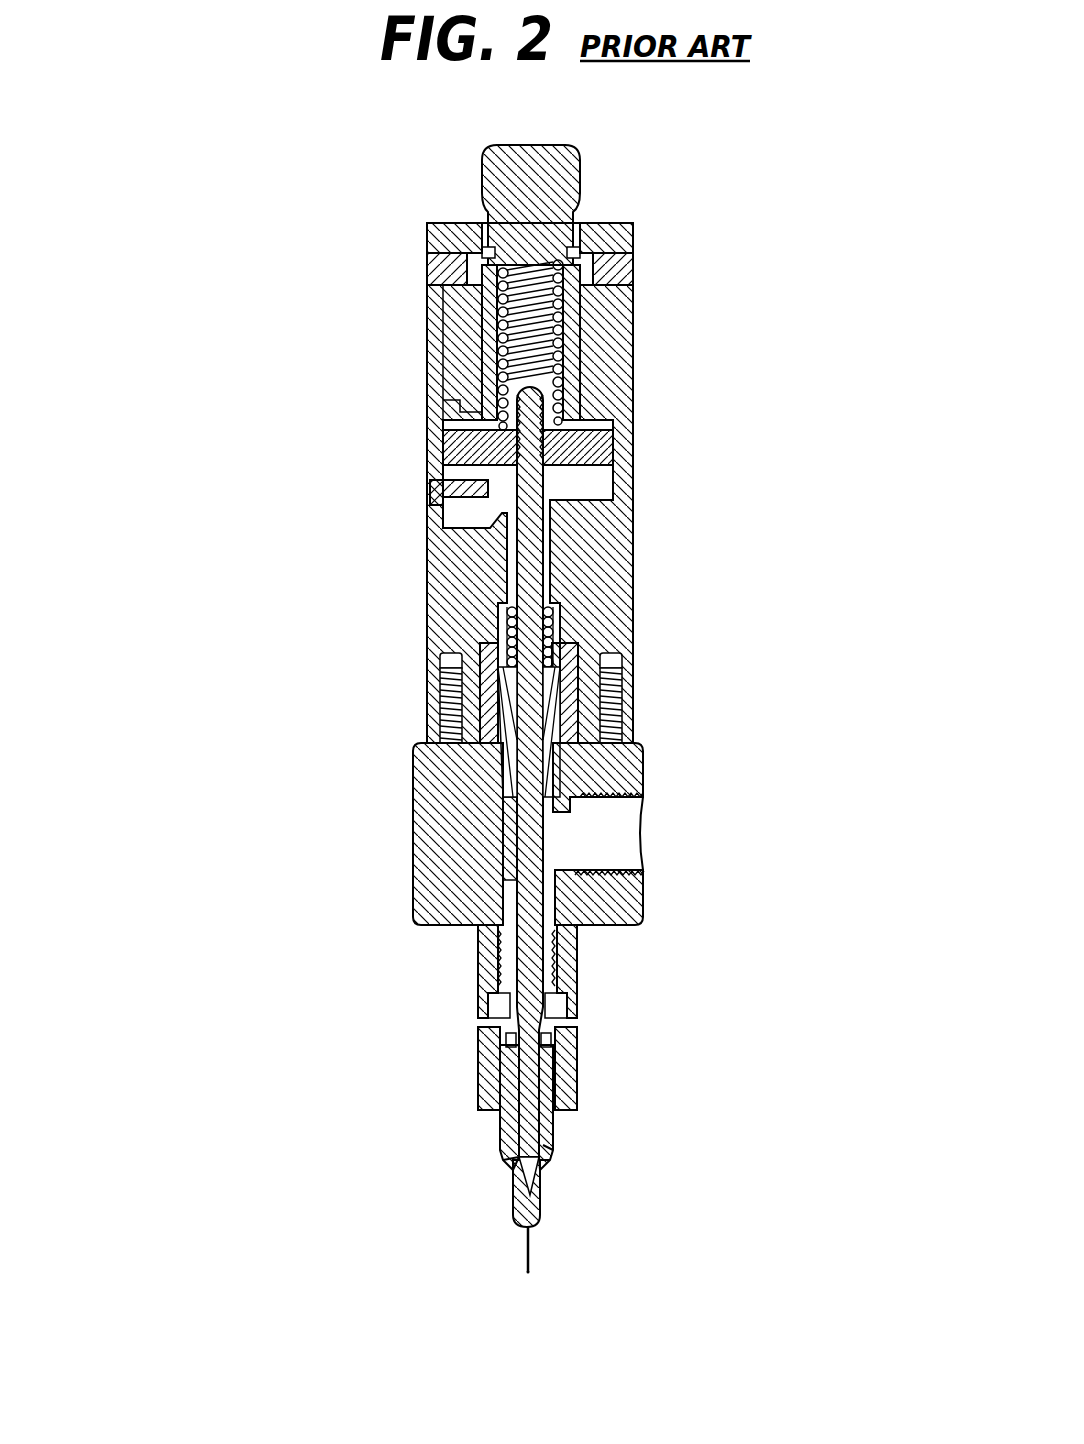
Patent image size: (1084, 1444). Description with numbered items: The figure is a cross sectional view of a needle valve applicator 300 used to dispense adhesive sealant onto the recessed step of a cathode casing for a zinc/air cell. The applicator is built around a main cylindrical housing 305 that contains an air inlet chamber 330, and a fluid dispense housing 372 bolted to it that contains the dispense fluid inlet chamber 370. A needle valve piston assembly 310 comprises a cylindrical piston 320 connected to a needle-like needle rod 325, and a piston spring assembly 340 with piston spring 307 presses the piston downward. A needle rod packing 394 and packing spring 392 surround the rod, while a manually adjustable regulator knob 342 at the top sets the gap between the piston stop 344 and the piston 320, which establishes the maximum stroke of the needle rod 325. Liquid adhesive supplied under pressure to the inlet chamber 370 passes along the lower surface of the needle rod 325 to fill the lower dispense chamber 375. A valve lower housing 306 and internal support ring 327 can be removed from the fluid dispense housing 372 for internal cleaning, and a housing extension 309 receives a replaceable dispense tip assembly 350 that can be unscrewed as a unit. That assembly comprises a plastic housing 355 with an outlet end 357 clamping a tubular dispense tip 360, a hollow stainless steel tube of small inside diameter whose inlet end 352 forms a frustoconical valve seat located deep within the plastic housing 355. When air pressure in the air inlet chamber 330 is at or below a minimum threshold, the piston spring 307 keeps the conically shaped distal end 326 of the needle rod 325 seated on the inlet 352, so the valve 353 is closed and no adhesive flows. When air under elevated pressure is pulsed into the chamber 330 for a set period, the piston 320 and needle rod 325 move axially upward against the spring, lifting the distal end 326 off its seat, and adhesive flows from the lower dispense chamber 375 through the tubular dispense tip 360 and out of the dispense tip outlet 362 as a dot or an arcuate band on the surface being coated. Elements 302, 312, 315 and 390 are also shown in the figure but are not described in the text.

The needle valve applicator 300 is at (237, 270).
The upper housing wall 302 is at (452, 315).
The main cylindrical housing 305 is at (435, 375).
The valve lower housing 306 is at (578, 1005).
The piston spring 307 is at (560, 360).
The housing extension 309 is at (578, 1065).
The needle valve piston assembly 310 is at (548, 468).
The retaining ring 312 is at (633, 263).
The housing top 315 is at (633, 235).
The cylindrical piston 320 is at (603, 450).
The needle rod 325 is at (548, 555).
The distal end of needle rod 326 is at (518, 1165).
The internal support ring 327 is at (555, 1043).
The air inlet chamber 330 is at (455, 498).
The piston spring assembly 340 is at (577, 332).
The regulator knob 342 is at (582, 182).
The piston stop 344 is at (443, 423).
The replaceable dispense tip assembly 350 is at (555, 1121).
The inlet end of tubular dispense tip 352 is at (560, 1165).
The valve 353 is at (520, 1172).
The plastic housing 355 is at (500, 1140).
The outlet end 357 is at (545, 1202).
The tubular dispense tip 360 is at (528, 1247).
The dispense tip outlet 362 is at (528, 1272).
The dispense fluid inlet chamber 370 is at (622, 843).
The fluid dispense housing 372 is at (440, 865).
The lower dispense chamber 375 is at (553, 1148).
The fastener 390 is at (562, 675).
The packing spring 392 is at (553, 612).
The needle rod packing 394 is at (507, 715).